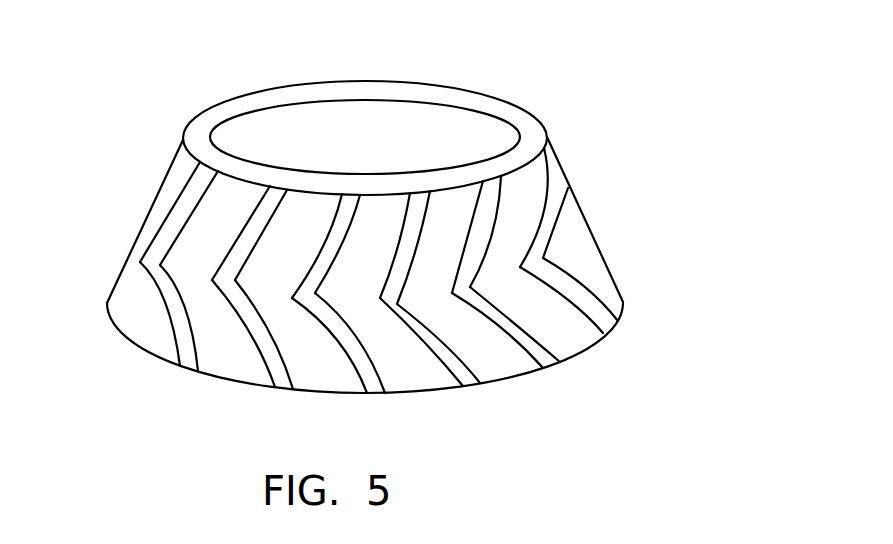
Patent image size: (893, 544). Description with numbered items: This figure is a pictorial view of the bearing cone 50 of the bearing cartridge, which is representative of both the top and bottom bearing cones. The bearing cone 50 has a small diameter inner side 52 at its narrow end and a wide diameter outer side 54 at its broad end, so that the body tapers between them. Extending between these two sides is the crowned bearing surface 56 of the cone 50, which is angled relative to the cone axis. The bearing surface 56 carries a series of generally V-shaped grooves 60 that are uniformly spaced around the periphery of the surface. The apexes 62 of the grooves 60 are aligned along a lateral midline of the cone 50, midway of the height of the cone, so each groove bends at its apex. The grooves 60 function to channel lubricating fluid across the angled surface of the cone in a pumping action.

The bearing cone 50 is at (324, 240).
The small diameter inner side 52 is at (530, 132).
The wide diameter outer side 54 is at (503, 382).
The crowned bearing surface 56 is at (173, 197).
The V-shaped grooves 60 is at (340, 330).
The apexes 62 is at (207, 278).